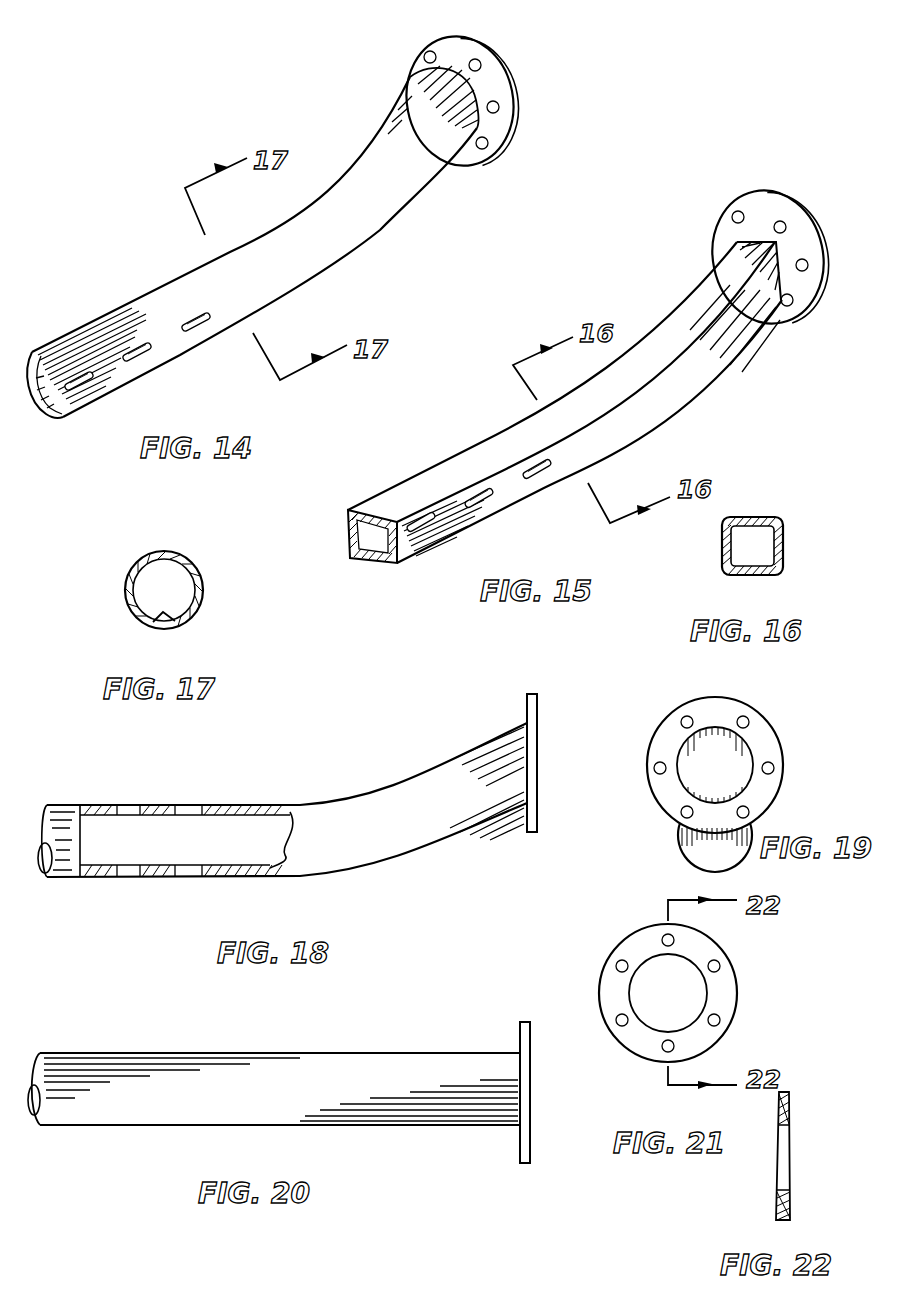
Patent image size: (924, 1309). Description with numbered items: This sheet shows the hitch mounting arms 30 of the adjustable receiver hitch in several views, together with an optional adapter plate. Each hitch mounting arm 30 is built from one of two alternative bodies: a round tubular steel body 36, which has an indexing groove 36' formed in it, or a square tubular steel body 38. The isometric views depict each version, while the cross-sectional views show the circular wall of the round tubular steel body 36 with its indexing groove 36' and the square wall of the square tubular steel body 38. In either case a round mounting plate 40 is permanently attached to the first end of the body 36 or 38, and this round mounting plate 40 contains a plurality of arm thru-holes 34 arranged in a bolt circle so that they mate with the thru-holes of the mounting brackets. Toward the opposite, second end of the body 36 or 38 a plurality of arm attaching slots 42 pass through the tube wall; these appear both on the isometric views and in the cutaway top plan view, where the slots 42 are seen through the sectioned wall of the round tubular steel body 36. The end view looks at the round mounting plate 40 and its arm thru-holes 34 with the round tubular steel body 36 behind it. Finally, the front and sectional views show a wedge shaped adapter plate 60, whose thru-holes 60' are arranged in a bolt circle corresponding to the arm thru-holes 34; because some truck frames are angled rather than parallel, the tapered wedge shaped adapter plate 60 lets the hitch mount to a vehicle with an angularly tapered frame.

In FIG. 14, the hitch mounting arm 30 is at (350, 154).
In FIG. 15, the hitch mounting arm 30 is at (661, 302).
In FIG. 16, the hitch mounting arm 30 is at (790, 547).
In FIG. 17, the hitch mounting arm 30 is at (111, 603).
In FIG. 18, the hitch mounting arm 30 is at (370, 789).
In FIG. 19, the hitch mounting arm 30 is at (685, 861).
In FIG. 20, the hitch mounting arm 30 is at (425, 1052).
In FIG. 14, the arm thru-holes 34 is at (474, 62).
In FIG. 15, the arm thru-holes 34 is at (782, 228).
In FIG. 19, the arm thru-holes 34 is at (683, 720).
In FIG. 14, the round tubular steel body 36 is at (252, 242).
In FIG. 17, the round tubular steel body 36 is at (194, 574).
In FIG. 18, the round tubular steel body 36 is at (271, 802).
In FIG. 19, the round tubular steel body 36 is at (666, 800).
In FIG. 20, the round tubular steel body 36 is at (273, 1152).
In FIG. 17, the indexing groove 36' is at (203, 630).
In FIG. 15, the square tubular steel body 38 is at (471, 450).
In FIG. 16, the square tubular steel body 38 is at (760, 517).
In FIG. 14, the round mounting plate 40 is at (515, 153).
In FIG. 15, the round mounting plate 40 is at (760, 190).
In FIG. 18, the round mounting plate 40 is at (531, 694).
In FIG. 19, the round mounting plate 40 is at (766, 713).
In FIG. 20, the round mounting plate 40 is at (518, 1163).
In FIG. 14, the arm attaching slots 42 is at (130, 360).
In FIG. 15, the arm attaching slots 42 is at (421, 530).
In FIG. 18, the arm attaching slots 42 is at (226, 805).
In FIG. 21, the wedge shaped adapter plate 60 is at (713, 993).
In FIG. 22, the wedge shaped adapter plate 60 is at (816, 1156).
In FIG. 21, the bolt holes of flange plate 60' is at (626, 993).
In FIG. 22, the bolt holes of flange plate 60' is at (733, 1161).